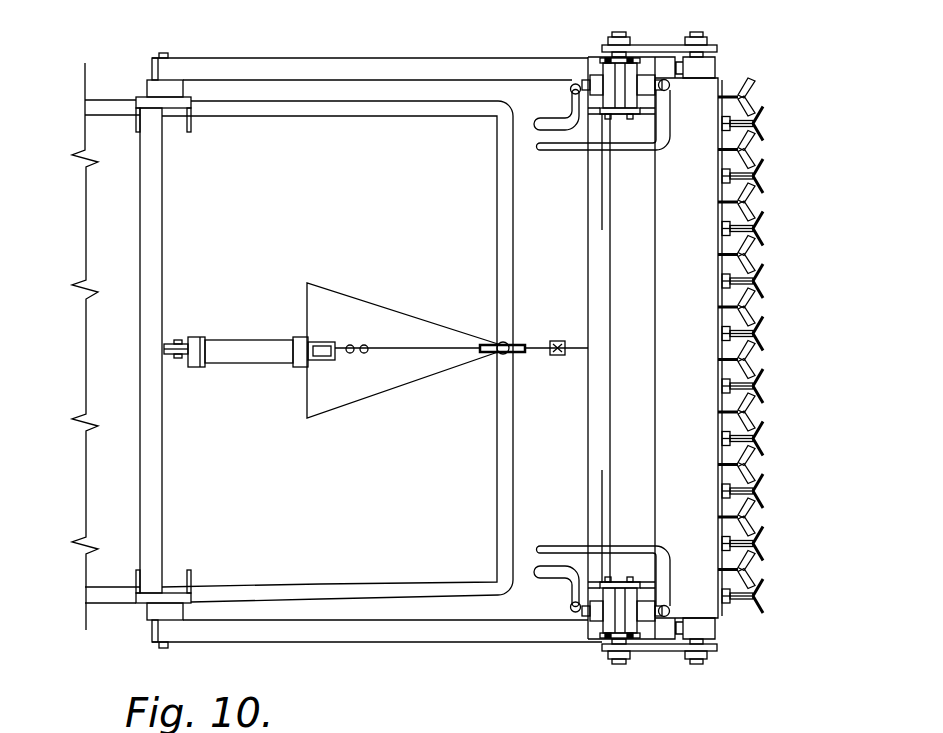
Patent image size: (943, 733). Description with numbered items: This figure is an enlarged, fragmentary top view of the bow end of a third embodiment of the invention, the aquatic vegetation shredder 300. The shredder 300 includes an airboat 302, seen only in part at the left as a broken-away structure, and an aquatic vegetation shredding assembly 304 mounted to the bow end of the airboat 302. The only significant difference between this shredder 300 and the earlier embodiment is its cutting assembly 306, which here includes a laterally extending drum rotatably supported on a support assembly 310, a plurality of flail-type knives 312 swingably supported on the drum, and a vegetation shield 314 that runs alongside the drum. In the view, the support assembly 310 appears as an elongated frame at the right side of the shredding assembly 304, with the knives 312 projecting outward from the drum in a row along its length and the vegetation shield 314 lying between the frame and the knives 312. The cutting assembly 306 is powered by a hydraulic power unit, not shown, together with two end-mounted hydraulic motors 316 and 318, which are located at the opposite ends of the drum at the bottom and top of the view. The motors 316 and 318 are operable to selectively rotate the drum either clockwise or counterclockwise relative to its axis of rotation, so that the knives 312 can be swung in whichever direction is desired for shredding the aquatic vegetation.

The aquatic vegetation shredder 300 is at (75, 350).
The airboat 302 is at (110, 235).
The aquatic vegetation shredding assembly 304 is at (745, 28).
The cutting assembly 306 is at (775, 310).
The support assembly 310 is at (580, 502).
The knives 312 is at (742, 421).
The vegetation shield 314 is at (700, 193).
The hydraulic motor 316 is at (617, 615).
The hydraulic motor 318 is at (615, 80).